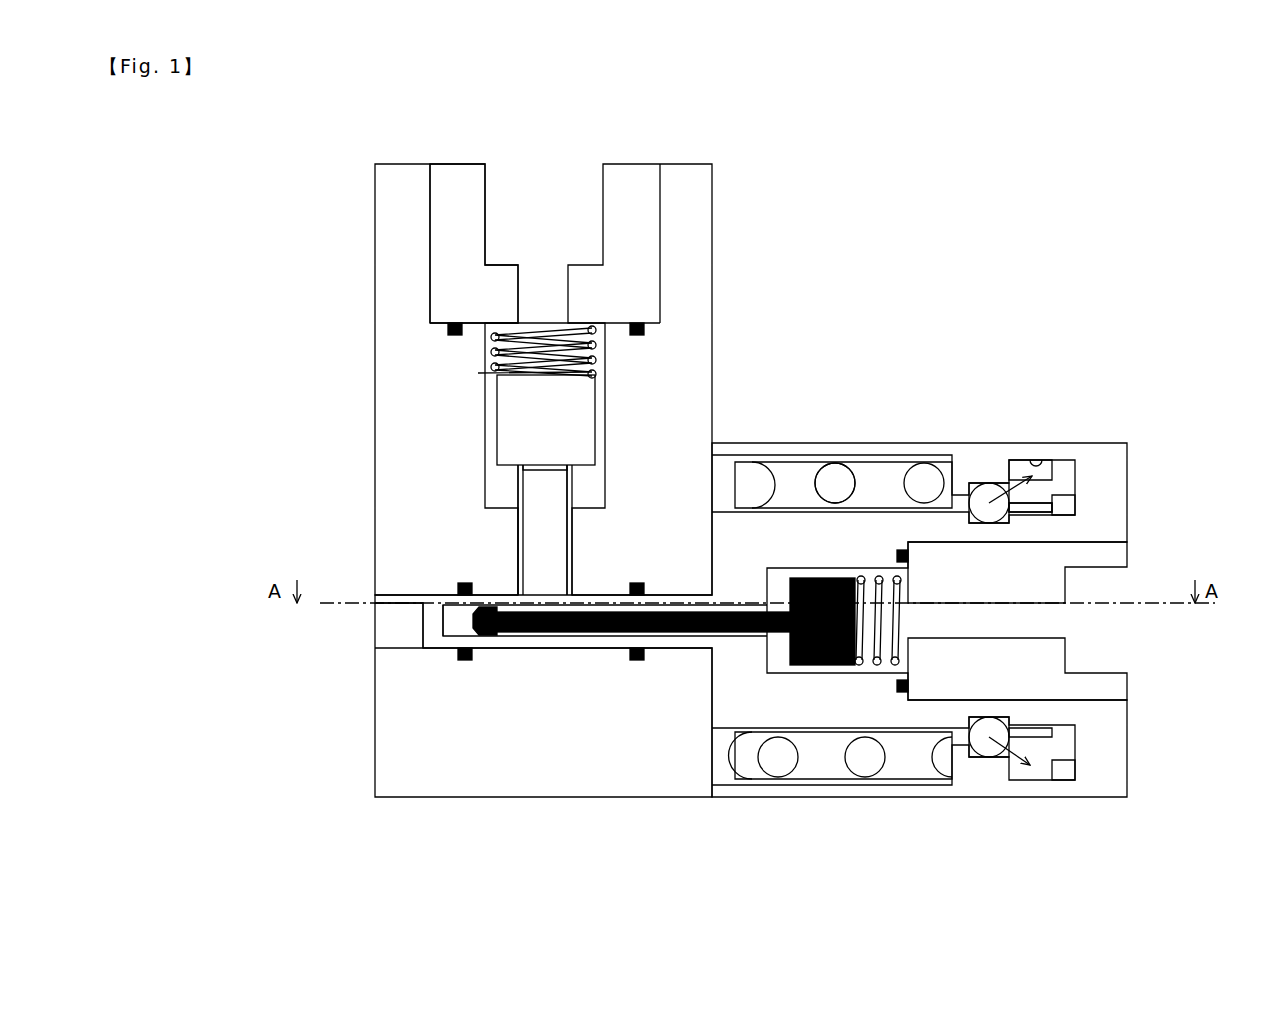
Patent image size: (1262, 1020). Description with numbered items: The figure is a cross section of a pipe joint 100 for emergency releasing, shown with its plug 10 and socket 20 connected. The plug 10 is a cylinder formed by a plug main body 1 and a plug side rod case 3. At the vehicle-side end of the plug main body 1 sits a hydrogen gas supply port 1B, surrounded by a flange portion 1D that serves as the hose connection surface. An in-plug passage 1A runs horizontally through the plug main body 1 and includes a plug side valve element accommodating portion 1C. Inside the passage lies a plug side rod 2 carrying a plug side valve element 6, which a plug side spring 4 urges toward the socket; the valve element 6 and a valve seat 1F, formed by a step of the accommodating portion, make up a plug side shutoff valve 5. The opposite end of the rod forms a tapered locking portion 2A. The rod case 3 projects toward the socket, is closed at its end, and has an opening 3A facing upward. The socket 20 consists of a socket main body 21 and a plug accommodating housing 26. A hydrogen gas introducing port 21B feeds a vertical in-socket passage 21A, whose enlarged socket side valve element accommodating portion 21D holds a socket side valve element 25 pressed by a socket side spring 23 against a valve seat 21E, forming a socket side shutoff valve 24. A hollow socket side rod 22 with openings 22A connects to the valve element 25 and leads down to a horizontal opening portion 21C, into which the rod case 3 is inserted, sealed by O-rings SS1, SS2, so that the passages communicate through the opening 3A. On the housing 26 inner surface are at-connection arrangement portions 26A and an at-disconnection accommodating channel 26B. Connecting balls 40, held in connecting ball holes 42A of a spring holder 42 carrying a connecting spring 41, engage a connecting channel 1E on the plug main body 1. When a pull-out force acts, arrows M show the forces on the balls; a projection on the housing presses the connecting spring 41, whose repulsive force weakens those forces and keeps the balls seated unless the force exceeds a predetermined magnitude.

The pipe joint 100 is at (1025, 272).
The plug main body 1 is at (712, 708).
The in-plug passage 1A is at (836, 473).
The hydrogen gas supply port 1B is at (1128, 673).
The plug side valve element accommodating portion 1C is at (868, 578).
The flange portion 1D is at (1130, 455).
The connecting channel 1E is at (1003, 523).
The valve seat 1F is at (777, 660).
The plug side rod 2 is at (673, 637).
The locking portion 2A is at (495, 637).
The plug side rod case 3 is at (558, 638).
The opening 3A is at (553, 603).
The plug side spring 4 is at (873, 667).
The plug side shutoff valve 5 is at (808, 668).
The plug side valve element 6 is at (823, 664).
The plug 10 is at (1140, 545).
The socket 20 is at (366, 337).
The socket main body 21 is at (377, 490).
The in-socket passage 21A is at (568, 492).
The hydrogen gas introducing port 21B is at (486, 192).
The opening portion 21C is at (405, 650).
The socket side valve element accommodating portion 21D is at (597, 400).
The valve seat 21E is at (503, 508).
The socket side rod 22 is at (522, 548).
The openings 22A is at (603, 504).
The socket side spring 23 is at (492, 332).
The socket side shutoff valve 24 is at (512, 497).
The socket side valve element 25 is at (492, 410).
The plug accommodating housing 26 is at (783, 455).
The at-connection arrangement portions 26A is at (1006, 468).
The at-disconnection accommodating channel 26B is at (1062, 460).
The connecting balls 40 is at (982, 490).
The connecting spring 41 is at (835, 483).
The spring holder 42 is at (1050, 508).
The connecting ball holes 42A is at (1013, 513).
The O-ring SS1 is at (636, 660).
The O-ring SS2 is at (462, 660).
The forces (arrows) M is at (1030, 462).